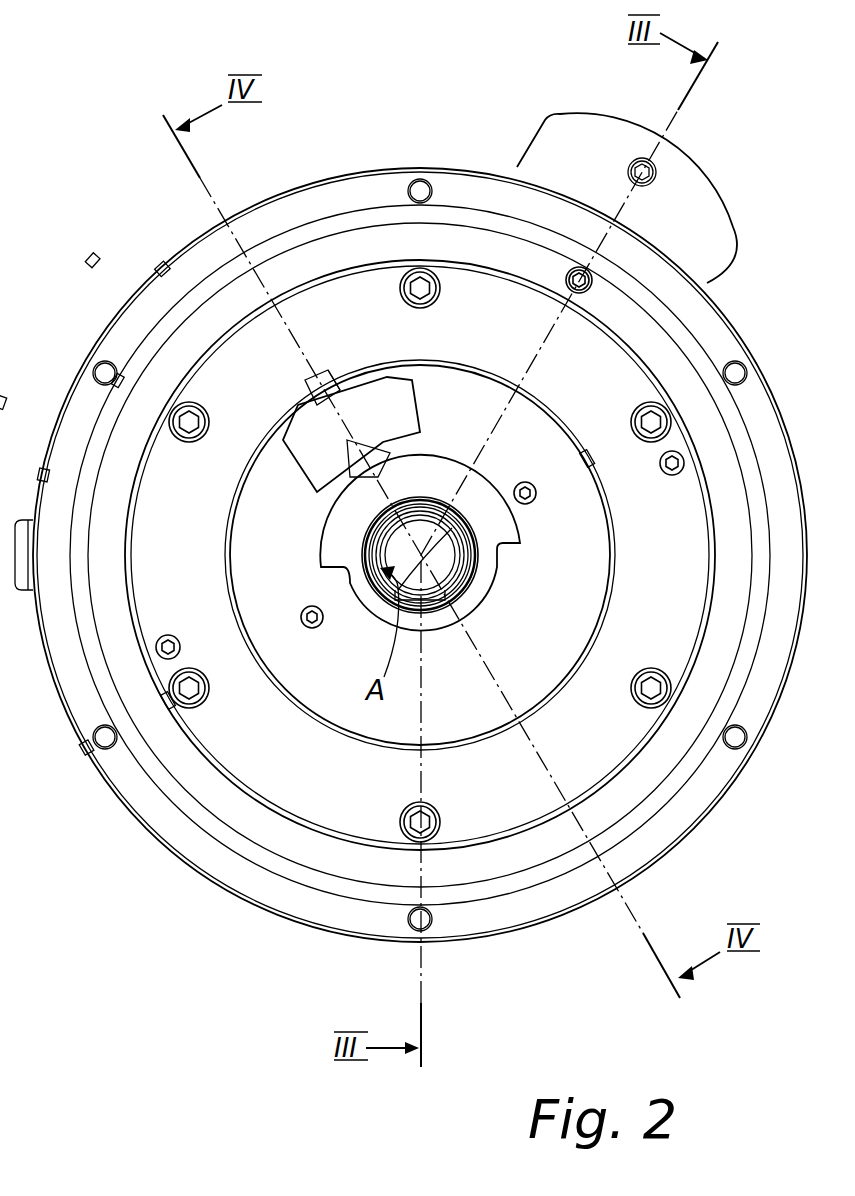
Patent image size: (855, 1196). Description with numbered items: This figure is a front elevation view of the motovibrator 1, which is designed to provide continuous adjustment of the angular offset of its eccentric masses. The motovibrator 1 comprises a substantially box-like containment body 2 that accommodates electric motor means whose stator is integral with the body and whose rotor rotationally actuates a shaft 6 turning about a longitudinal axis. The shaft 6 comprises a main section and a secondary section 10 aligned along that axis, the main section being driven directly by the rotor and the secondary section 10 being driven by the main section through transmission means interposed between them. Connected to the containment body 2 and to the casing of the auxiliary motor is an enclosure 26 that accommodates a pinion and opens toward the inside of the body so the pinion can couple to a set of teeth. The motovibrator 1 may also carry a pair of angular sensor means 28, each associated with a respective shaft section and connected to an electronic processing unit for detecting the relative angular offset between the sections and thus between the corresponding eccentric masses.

The motovibrator 1 is at (165, 962).
The containment body 2 is at (150, 850).
The shaft 6 is at (380, 571).
The secondary section 10 is at (397, 552).
The enclosure 26 is at (680, 220).
The angular sensor means 28 is at (330, 385).